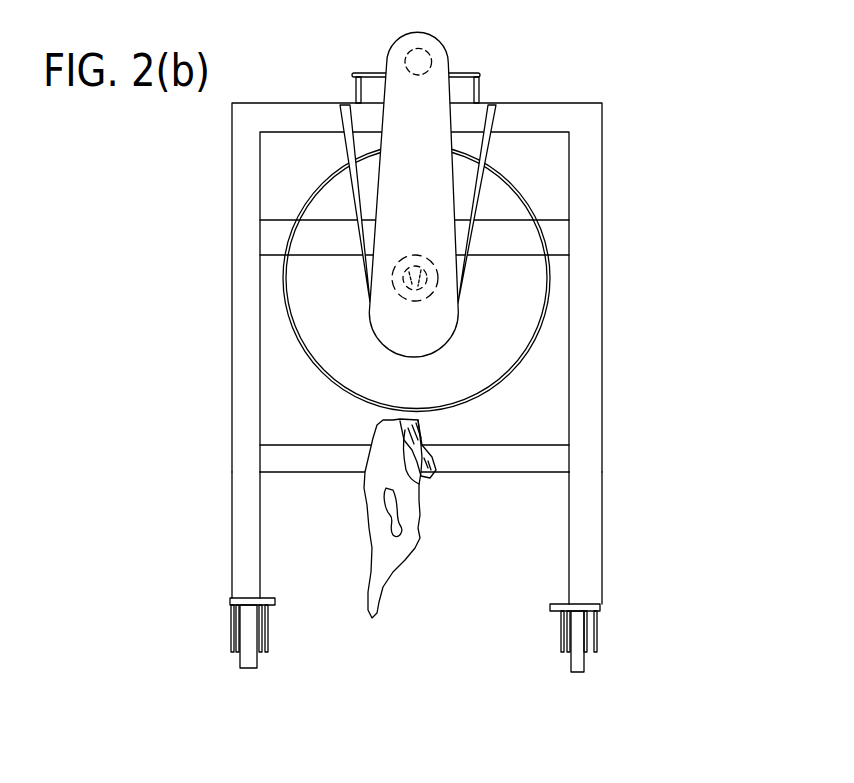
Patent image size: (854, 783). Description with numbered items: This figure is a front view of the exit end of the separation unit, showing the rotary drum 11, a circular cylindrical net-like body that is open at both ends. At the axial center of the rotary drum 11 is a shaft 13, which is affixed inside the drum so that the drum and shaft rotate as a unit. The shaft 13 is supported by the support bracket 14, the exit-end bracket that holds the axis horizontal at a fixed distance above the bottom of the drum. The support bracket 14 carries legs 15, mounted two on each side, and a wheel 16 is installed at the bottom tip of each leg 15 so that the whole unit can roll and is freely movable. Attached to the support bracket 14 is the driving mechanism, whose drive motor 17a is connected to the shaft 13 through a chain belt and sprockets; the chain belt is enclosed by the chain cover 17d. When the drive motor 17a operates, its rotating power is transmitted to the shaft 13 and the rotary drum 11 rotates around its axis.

The rotary drum 11 is at (550, 290).
The shaft 13 is at (433, 290).
The support bracket 14 is at (592, 155).
The legs 15 is at (240, 523).
The wheel 16 is at (240, 658).
The drive motor 17a is at (436, 42).
The chain cover 17d is at (435, 100).